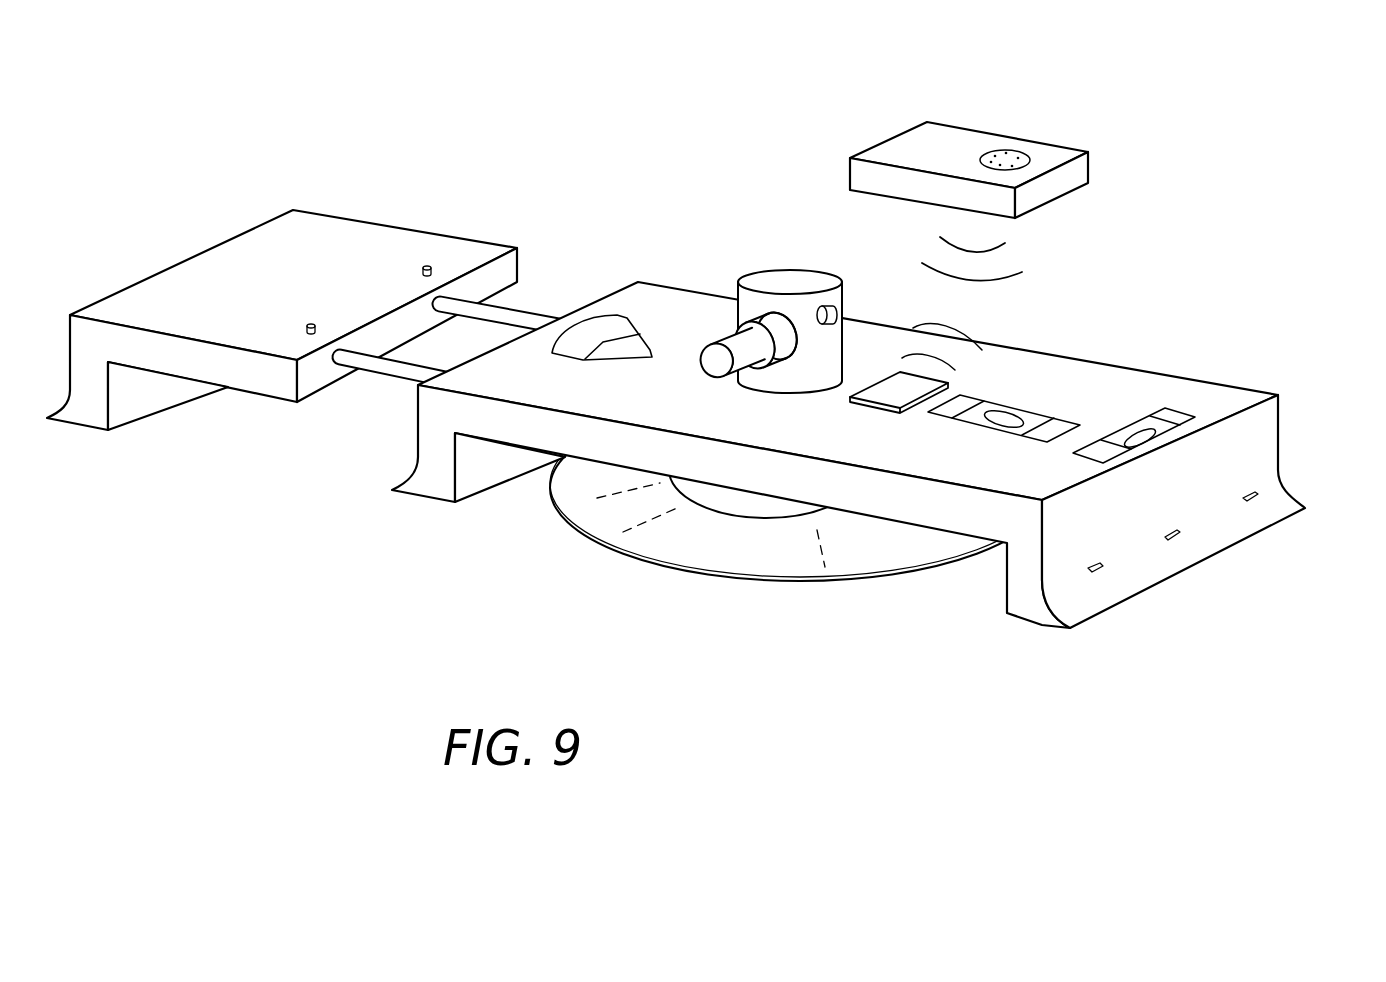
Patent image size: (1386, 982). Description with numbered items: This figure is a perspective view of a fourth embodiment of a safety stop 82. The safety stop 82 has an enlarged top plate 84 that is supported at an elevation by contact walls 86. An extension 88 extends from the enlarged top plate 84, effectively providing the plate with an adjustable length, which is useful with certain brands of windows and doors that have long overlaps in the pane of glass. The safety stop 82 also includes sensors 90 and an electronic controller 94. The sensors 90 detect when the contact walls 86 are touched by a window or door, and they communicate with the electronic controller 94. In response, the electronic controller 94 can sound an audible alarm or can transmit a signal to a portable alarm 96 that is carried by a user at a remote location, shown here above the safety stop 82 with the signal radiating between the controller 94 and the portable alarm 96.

The safety stop 82 is at (885, 449).
The enlarged top plate 84 is at (1110, 385).
The contact walls 86 is at (1283, 507).
The extension 88 is at (470, 253).
The sensors 90 is at (1178, 536).
The electronic controller 94 is at (895, 388).
The portable alarm 96 is at (857, 182).